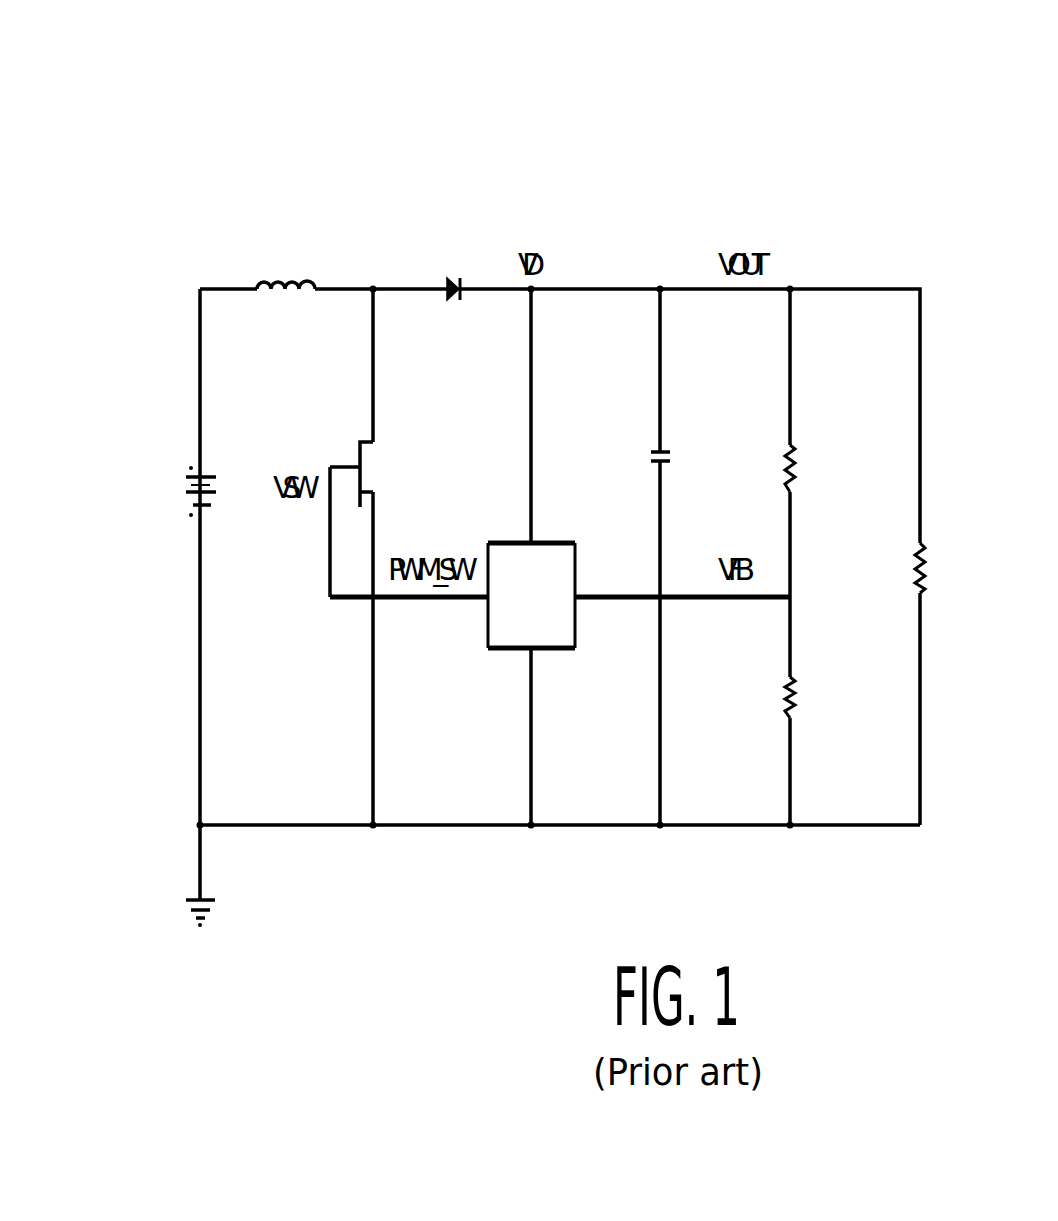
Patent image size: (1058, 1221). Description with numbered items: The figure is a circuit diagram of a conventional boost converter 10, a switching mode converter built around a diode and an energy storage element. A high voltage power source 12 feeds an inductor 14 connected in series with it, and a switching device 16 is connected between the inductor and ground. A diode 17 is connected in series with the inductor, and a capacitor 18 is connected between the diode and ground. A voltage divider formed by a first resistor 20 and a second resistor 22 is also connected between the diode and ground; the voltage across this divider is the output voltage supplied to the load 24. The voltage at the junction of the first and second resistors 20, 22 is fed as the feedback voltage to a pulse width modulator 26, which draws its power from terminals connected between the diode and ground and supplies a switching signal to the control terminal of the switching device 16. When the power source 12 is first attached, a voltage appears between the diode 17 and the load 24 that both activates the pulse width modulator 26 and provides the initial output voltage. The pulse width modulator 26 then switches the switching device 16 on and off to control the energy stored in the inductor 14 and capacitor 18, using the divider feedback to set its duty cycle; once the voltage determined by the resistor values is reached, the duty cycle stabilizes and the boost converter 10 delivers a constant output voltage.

The boost converter 10 is at (408, 917).
The high voltage power source 12 is at (158, 453).
The inductor 14 is at (312, 238).
The switching device 16 is at (377, 463).
The diode 17 is at (475, 268).
The capacitor 18 is at (647, 432).
The first resistor 20 is at (803, 470).
The second resistor 22 is at (803, 702).
The load 24 is at (912, 597).
The pulse width modulator 26 is at (567, 637).